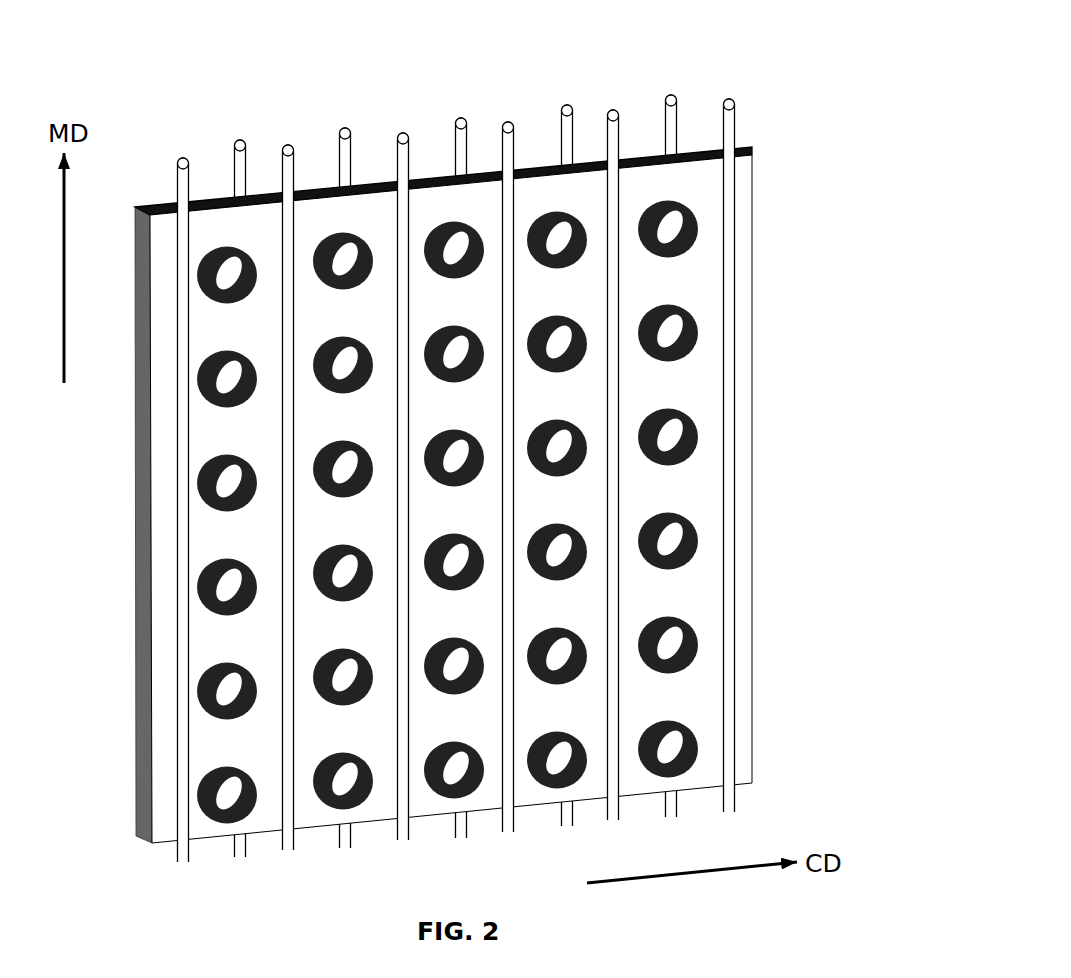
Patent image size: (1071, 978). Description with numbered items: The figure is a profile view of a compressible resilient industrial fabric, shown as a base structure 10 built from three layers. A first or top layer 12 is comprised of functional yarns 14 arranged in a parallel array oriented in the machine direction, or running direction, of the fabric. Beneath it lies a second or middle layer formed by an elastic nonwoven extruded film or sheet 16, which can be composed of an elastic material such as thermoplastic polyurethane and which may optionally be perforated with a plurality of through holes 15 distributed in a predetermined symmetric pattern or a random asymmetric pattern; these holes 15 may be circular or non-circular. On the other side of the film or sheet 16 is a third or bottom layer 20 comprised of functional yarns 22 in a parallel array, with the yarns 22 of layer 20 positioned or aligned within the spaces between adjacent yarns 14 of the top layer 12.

The base structure 10 is at (542, 80).
The first or top layer 12 is at (740, 240).
The functional yarns 14 is at (178, 462).
The through holes 15 is at (670, 548).
The elastic nonwoven extruded film or sheet 16 is at (705, 395).
The third or bottom layer 20 is at (343, 140).
The functional yarns 22 is at (672, 100).